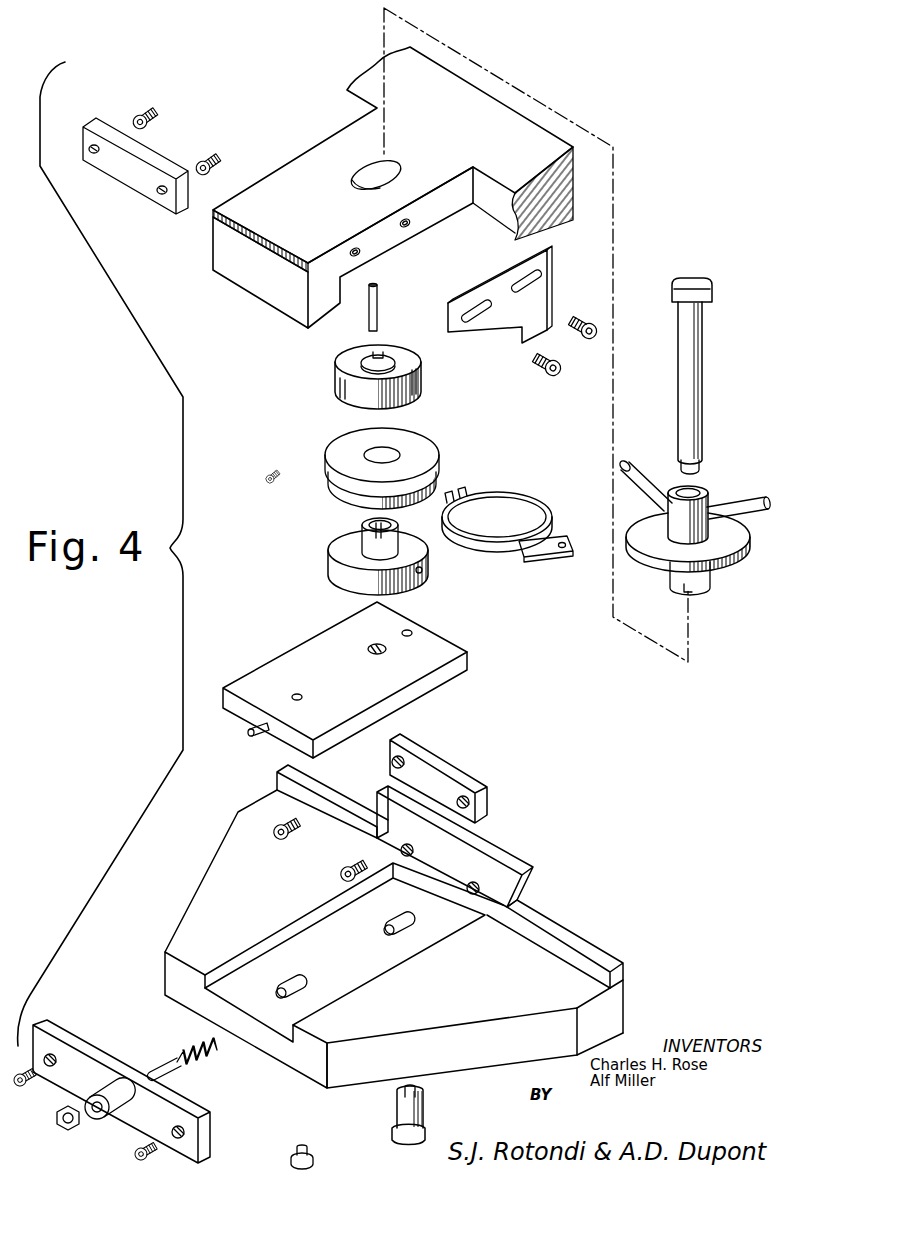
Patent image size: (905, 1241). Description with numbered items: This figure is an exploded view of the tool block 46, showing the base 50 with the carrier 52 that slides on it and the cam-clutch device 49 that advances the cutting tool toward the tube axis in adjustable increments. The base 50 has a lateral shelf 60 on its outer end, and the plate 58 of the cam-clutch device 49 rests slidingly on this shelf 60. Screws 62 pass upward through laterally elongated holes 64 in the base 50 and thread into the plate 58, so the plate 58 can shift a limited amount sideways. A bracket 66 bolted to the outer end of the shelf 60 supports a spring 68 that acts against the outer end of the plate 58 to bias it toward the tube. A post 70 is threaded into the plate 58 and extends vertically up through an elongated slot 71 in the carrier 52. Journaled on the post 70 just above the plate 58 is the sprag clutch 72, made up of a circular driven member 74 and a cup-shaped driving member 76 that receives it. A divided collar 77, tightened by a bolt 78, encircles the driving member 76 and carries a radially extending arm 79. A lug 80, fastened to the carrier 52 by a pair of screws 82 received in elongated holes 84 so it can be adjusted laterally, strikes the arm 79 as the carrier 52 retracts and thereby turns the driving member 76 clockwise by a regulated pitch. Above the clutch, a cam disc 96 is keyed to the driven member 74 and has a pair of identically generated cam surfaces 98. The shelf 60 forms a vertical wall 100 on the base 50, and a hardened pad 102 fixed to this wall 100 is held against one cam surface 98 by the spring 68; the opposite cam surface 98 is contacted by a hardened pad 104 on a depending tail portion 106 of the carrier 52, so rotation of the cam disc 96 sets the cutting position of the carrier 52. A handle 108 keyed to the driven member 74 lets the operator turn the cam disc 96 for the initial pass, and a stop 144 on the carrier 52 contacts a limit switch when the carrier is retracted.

The tool block 46 is at (172, 480).
The cam-clutch device 49 is at (463, 682).
The base 50 is at (572, 937).
The carrier 52 is at (308, 163).
The plate 58 is at (292, 678).
The lateral shelf 60 is at (502, 1053).
The screws 62 is at (312, 1148).
The elongated holes 64 is at (388, 925).
The bracket 66 is at (195, 1112).
The spring 68 is at (198, 1036).
The post 70 is at (695, 388).
The slot 71 is at (388, 165).
The sprag clutch 72 is at (342, 520).
The driven member 74 is at (350, 567).
The driving member 76 is at (427, 456).
The divided collar 77 is at (536, 497).
The bolt 78 is at (271, 467).
The arm 79 is at (535, 558).
The lug 80 is at (522, 333).
The screws 82 is at (580, 336).
The elongated holes 84 is at (528, 282).
The cam disc 96 is at (343, 354).
The cam surfaces 98 is at (341, 386).
The vertical wall 100 is at (481, 860).
The hardened pad 102 is at (458, 780).
The hardened pad 104 is at (176, 166).
The tail portion 106 is at (376, 288).
The handle 108 is at (703, 490).
The stop 144 is at (520, 242).